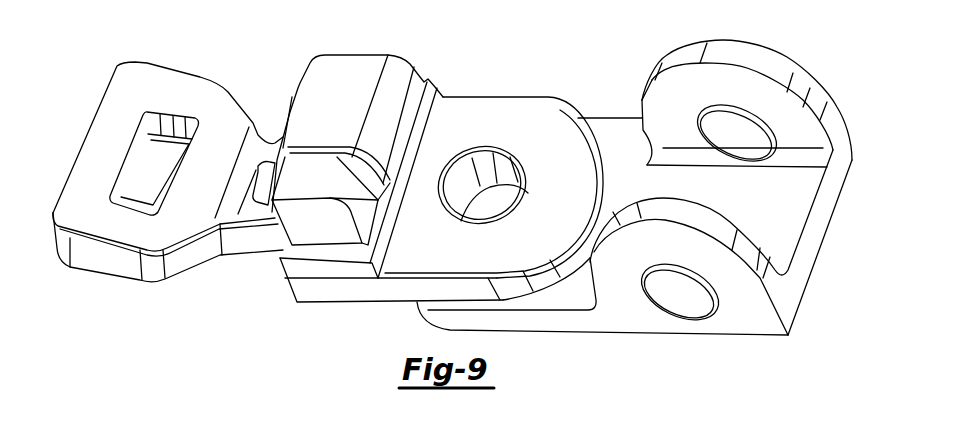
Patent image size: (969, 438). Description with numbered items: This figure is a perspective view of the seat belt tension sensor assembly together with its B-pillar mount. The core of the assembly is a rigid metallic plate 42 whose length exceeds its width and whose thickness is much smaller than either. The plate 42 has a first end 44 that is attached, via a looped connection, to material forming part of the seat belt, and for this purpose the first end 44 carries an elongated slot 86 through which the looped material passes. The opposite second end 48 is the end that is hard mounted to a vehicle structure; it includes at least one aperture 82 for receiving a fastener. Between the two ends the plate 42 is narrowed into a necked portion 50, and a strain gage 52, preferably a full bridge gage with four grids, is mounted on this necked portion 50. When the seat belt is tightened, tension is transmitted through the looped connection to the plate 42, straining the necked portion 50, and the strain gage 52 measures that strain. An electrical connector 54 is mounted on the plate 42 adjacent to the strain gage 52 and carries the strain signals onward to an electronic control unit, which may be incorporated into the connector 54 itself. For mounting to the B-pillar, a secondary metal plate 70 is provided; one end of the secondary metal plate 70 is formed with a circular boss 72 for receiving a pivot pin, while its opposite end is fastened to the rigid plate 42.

The metallic plate 42 is at (320, 290).
The first end 44 is at (63, 266).
The second end 48 is at (545, 115).
The necked portion 50 is at (233, 210).
The strain gage 52 is at (259, 177).
The electrical connector 54 is at (368, 72).
The secondary metal plate 70 is at (563, 297).
The circular boss 72 is at (688, 57).
The aperture 82 is at (492, 170).
The elongated slot 86 is at (168, 158).